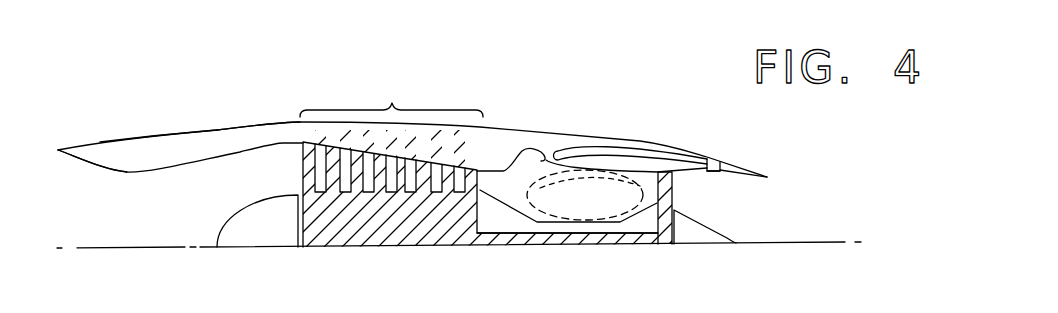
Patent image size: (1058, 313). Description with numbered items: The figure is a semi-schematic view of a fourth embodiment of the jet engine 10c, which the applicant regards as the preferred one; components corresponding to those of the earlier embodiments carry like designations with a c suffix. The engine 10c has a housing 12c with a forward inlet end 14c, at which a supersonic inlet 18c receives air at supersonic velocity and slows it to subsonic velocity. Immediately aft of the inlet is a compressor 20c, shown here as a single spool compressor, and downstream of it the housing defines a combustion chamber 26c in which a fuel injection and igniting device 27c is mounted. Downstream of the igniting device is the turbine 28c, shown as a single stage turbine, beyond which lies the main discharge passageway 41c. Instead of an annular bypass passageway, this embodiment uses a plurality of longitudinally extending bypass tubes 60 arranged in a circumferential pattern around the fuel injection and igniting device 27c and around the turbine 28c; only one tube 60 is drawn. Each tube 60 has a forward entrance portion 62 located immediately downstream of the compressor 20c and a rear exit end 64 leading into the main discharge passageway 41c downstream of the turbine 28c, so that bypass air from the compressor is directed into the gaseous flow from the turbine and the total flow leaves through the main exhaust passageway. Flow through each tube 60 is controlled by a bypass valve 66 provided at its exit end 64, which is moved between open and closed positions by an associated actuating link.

The engine 10c is at (309, 77).
The housing 12c is at (257, 115).
The forward inlet end 14c is at (175, 120).
The supersonic inlet 18c is at (100, 201).
The compressor 20c is at (383, 104).
The forward entrance portion 62 is at (537, 156).
The bypass tubes 60 is at (623, 147).
The rear exit end 64 is at (714, 159).
The bypass valve 66 is at (718, 175).
The main discharge passageway 41c is at (720, 210).
The fuel injection and igniting device 27c is at (521, 195).
The combustion chamber 26c is at (578, 196).
The turbine 28c is at (657, 247).